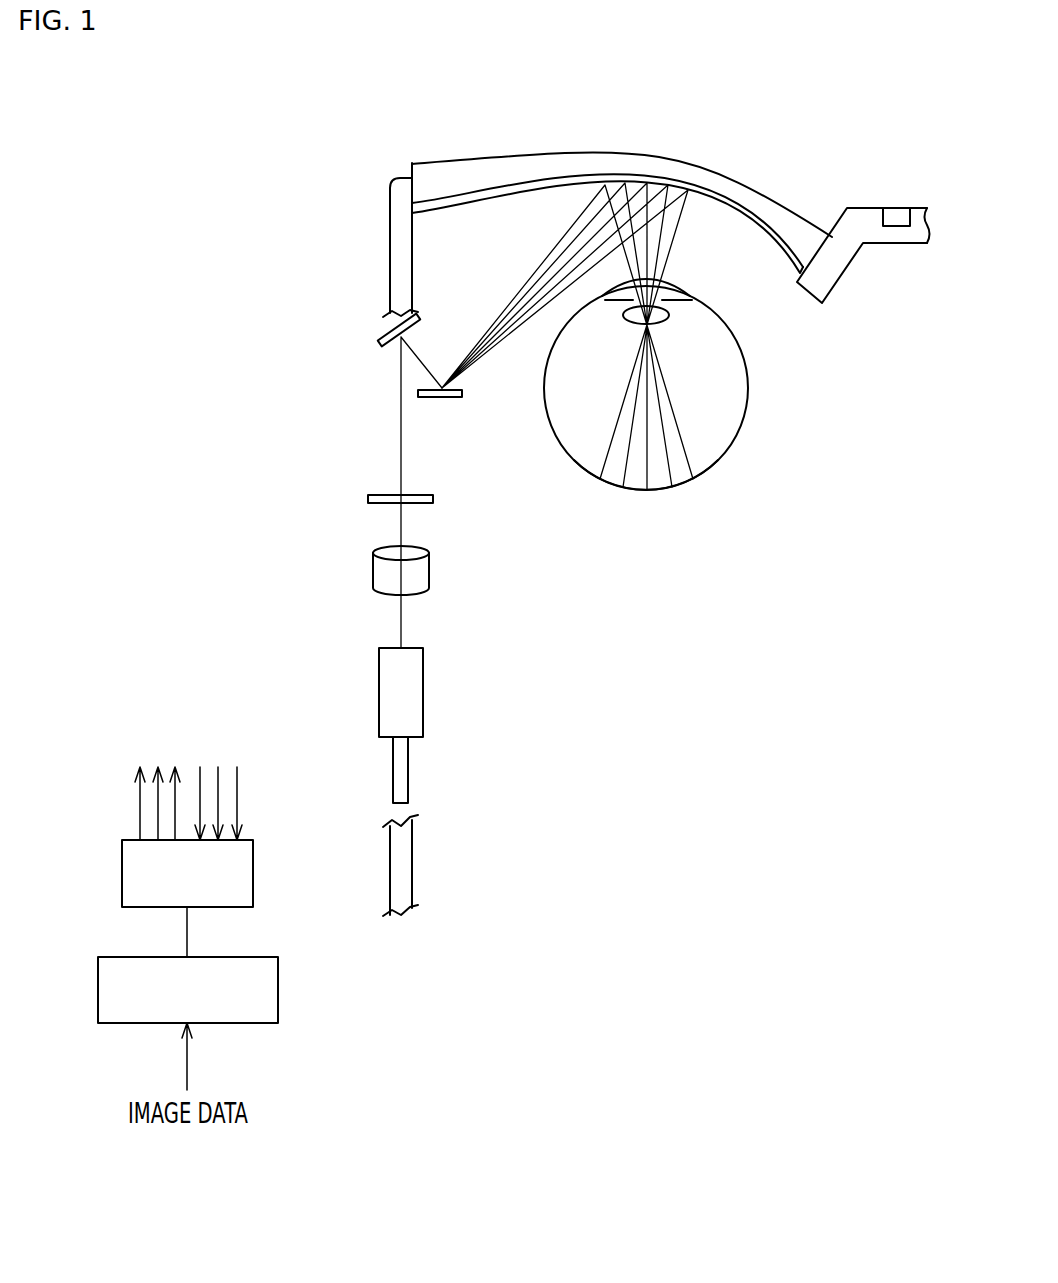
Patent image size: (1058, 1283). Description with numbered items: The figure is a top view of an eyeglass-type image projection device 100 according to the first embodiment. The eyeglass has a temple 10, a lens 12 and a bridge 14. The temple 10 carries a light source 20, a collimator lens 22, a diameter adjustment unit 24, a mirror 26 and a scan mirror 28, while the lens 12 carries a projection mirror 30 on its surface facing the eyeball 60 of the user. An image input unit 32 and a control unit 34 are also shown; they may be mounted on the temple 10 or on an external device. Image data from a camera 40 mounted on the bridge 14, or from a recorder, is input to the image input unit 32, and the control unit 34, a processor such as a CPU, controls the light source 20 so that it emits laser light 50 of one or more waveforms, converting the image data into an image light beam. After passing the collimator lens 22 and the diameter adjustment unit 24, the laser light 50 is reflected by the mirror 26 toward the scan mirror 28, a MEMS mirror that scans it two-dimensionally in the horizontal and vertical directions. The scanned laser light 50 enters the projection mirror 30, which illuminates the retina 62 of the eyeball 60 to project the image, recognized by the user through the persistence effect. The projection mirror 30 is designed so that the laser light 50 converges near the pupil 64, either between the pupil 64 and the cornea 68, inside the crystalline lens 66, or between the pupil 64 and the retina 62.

The image projection device 100 is at (797, 159).
The temple 10 is at (398, 272).
The lens 12 is at (516, 175).
The bridge 14 is at (900, 243).
The light source 20 is at (388, 700).
The collimator lens 22 is at (386, 577).
The diameter adjustment unit 24 is at (368, 498).
The mirror 26 is at (378, 338).
The scan mirror 28 is at (449, 398).
The projection mirror 30 is at (677, 182).
The image input unit 32 is at (98, 988).
The control unit 34 is at (122, 872).
The camera 40 is at (911, 208).
The laser light 50 is at (400, 623).
The eyeball 60 is at (750, 460).
The retina 62 is at (655, 490).
The pupil 64 is at (664, 302).
The crystalline lens 66 is at (678, 326).
The cornea 68 is at (657, 283).